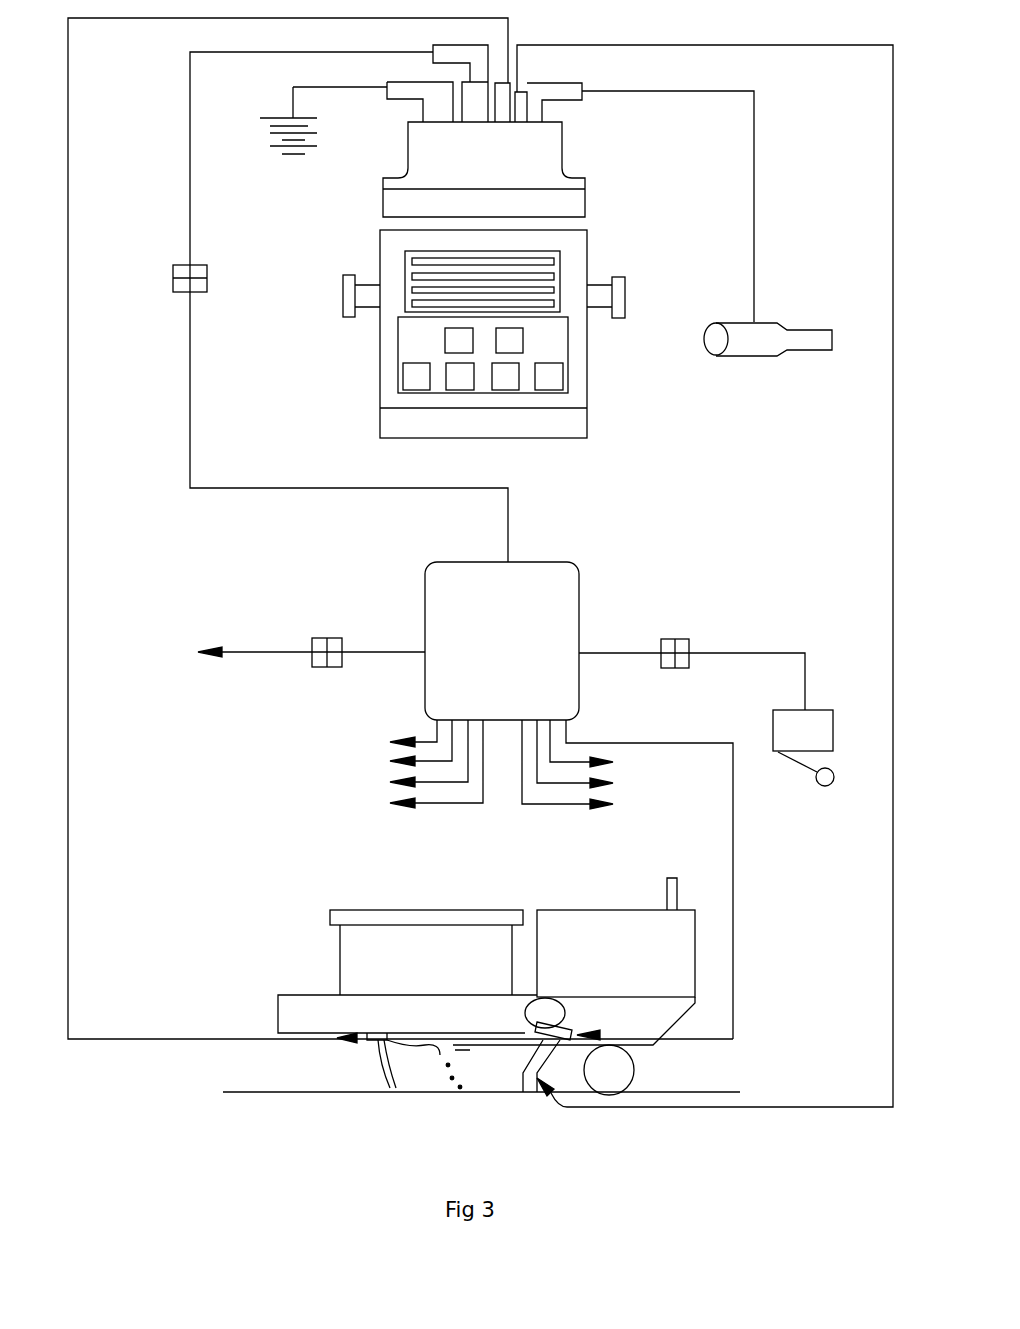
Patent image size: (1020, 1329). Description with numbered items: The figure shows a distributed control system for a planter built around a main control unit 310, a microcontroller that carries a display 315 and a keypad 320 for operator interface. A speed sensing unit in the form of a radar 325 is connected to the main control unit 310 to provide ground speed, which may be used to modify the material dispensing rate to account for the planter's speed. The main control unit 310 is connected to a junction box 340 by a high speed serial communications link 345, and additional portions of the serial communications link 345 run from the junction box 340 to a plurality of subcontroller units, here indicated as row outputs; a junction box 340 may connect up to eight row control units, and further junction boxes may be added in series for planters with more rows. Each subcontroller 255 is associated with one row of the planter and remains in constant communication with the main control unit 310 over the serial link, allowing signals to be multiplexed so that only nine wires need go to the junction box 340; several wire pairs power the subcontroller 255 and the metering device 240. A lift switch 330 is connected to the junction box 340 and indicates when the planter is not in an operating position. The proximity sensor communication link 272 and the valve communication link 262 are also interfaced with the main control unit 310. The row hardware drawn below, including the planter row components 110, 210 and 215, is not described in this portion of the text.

The substrate plate 110 is at (417, 1025).
The dispenser 210 is at (365, 958).
The cleaning station 215 is at (625, 923).
The metering device 240 is at (583, 1007).
The subcontroller 255 is at (582, 1025).
The valve communication link 262 is at (875, 487).
The proximity sensor communication link 272 is at (87, 848).
The main control unit 310 is at (534, 141).
The display 315 is at (535, 277).
The keypad 320 is at (418, 341).
The radar 325 is at (760, 347).
The lift switch 330 is at (824, 725).
The junction box 340 is at (527, 586).
The serial communications link 345 is at (205, 427).